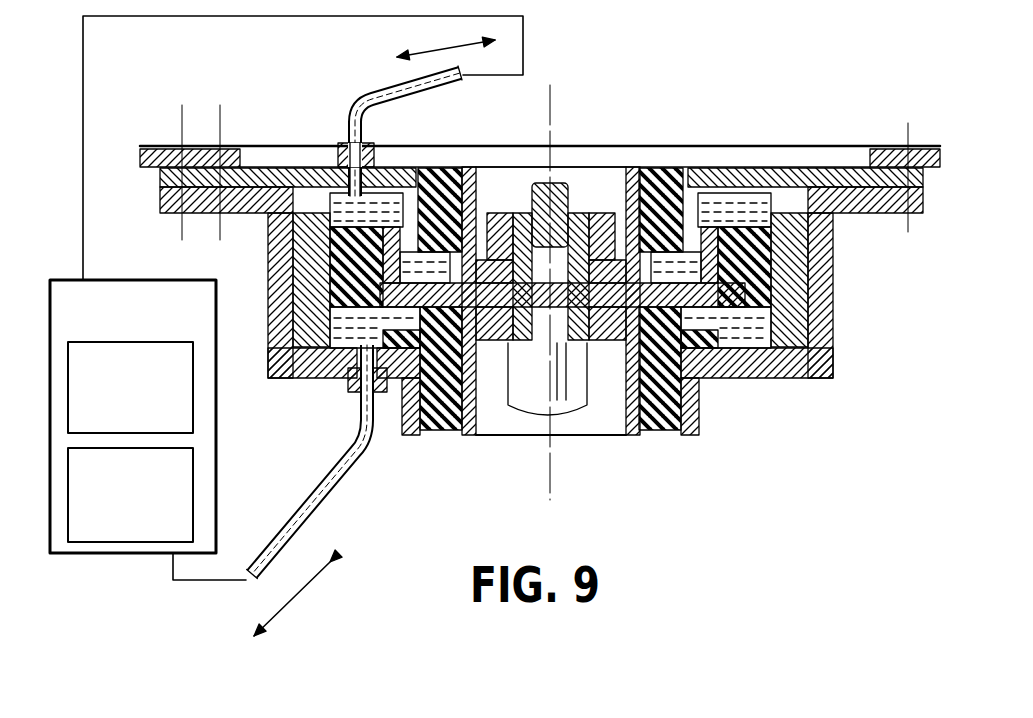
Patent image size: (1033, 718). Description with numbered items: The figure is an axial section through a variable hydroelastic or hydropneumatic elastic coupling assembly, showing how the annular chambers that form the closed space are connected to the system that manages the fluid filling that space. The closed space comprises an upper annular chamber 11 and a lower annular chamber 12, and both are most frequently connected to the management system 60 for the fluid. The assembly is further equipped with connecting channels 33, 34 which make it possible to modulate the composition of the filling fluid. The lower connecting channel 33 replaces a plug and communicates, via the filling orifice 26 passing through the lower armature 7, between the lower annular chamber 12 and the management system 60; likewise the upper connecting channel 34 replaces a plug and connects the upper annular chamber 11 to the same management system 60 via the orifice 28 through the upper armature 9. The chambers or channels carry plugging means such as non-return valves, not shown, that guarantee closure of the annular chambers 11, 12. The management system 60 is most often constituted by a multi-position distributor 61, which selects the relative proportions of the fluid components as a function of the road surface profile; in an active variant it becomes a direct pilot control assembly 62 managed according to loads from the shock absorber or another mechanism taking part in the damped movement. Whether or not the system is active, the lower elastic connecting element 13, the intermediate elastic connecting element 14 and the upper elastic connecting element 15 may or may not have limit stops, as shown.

The lower armature 7 is at (330, 346).
The upper armature 9 is at (786, 190).
The upper annular chamber 11 is at (732, 192).
The lower annular chamber 12 is at (748, 312).
The lower elastic connecting element 13 is at (443, 422).
The intermediate elastic connecting element 14 is at (340, 273).
The upper elastic connecting element 15 is at (668, 182).
The filling orifice 26 is at (347, 358).
The orifice 28 is at (333, 186).
The lower connecting channel 33 is at (313, 523).
The upper connecting channel 34 is at (390, 84).
The management system 60 is at (161, 390).
The multi-position distributor 61 is at (193, 388).
The direct pilot control assembly 62 is at (193, 482).